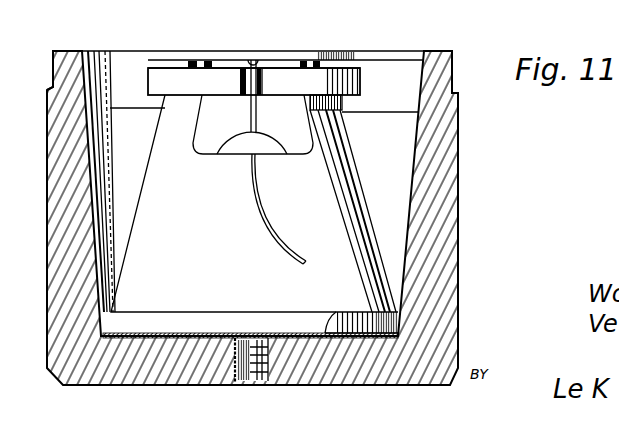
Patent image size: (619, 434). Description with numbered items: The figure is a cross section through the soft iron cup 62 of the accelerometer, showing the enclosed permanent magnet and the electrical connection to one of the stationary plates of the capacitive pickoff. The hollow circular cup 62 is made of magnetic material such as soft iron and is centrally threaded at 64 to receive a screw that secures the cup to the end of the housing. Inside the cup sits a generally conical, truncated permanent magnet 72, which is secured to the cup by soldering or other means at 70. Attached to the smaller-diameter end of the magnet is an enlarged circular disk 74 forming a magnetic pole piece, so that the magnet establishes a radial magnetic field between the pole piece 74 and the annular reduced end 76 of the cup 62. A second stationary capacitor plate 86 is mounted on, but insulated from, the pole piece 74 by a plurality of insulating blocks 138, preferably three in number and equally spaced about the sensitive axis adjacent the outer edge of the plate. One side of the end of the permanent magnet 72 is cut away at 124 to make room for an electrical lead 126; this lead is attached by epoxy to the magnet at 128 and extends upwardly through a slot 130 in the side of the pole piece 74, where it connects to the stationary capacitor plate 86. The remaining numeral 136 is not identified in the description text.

The hollow circular cup 62 is at (456, 206).
The annular reduced end 76 is at (60, 73).
The central threading 64 is at (258, 363).
The soldering 70 is at (330, 313).
The permanent magnet 72 is at (212, 226).
The circular disk 74 is at (170, 78).
The second stationary capacitor plate 86 is at (232, 55).
The cut-away 124 is at (240, 121).
The lead 126 is at (272, 215).
The epoxy attachment 128 is at (268, 137).
The slot 130 is at (258, 82).
The pin 136 is at (270, 57).
The insulating blocks 138 is at (192, 62).